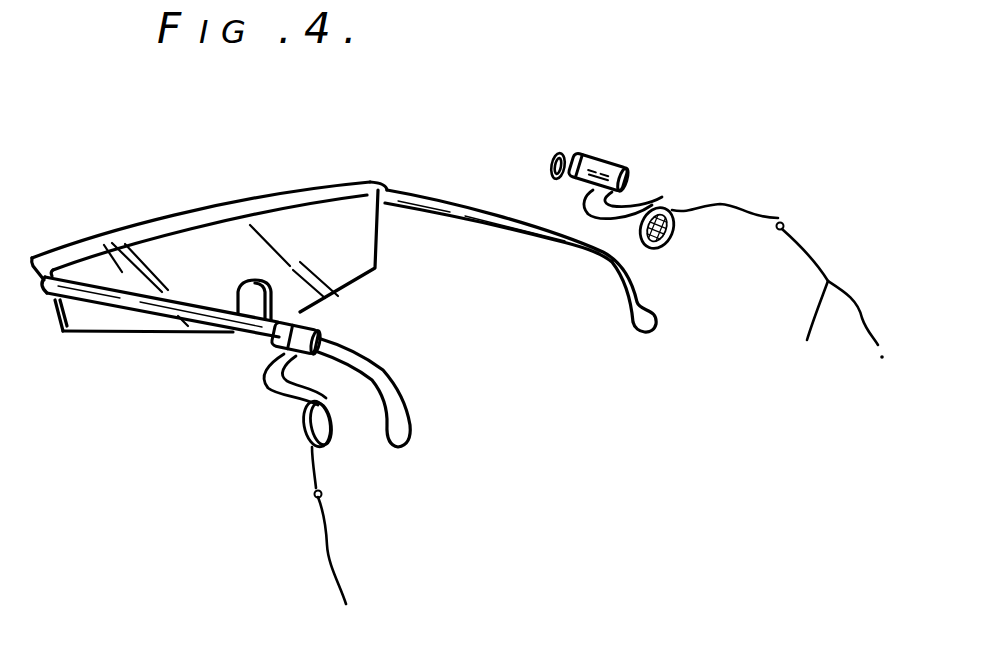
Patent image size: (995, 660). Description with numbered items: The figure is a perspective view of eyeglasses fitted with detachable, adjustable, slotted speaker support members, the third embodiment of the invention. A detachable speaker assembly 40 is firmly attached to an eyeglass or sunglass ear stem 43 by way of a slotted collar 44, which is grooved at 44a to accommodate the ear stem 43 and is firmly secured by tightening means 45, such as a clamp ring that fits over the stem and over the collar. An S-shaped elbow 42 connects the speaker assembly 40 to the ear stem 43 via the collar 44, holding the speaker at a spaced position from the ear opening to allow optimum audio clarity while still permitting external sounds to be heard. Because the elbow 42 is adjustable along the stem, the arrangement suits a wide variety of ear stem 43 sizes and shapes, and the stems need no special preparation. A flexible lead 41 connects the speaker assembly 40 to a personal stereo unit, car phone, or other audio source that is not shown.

The detachable speaker assembly 40 is at (290, 434).
The flexible lead 41 is at (328, 548).
The S-shaped elbow 42 is at (287, 392).
The ear stem 43 is at (432, 197).
The slotted collar 44 is at (300, 327).
The groove 44a is at (627, 177).
The tightening means 45 is at (548, 160).